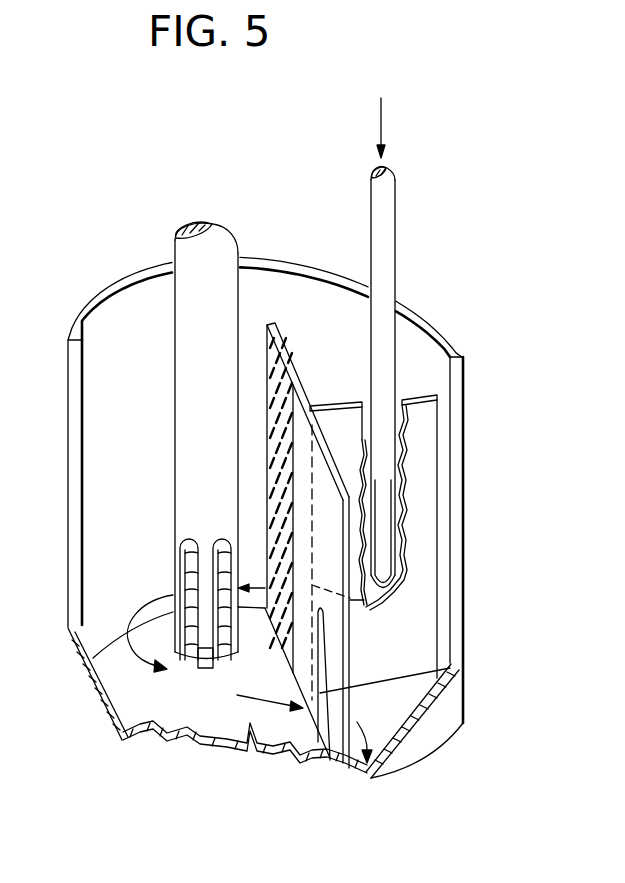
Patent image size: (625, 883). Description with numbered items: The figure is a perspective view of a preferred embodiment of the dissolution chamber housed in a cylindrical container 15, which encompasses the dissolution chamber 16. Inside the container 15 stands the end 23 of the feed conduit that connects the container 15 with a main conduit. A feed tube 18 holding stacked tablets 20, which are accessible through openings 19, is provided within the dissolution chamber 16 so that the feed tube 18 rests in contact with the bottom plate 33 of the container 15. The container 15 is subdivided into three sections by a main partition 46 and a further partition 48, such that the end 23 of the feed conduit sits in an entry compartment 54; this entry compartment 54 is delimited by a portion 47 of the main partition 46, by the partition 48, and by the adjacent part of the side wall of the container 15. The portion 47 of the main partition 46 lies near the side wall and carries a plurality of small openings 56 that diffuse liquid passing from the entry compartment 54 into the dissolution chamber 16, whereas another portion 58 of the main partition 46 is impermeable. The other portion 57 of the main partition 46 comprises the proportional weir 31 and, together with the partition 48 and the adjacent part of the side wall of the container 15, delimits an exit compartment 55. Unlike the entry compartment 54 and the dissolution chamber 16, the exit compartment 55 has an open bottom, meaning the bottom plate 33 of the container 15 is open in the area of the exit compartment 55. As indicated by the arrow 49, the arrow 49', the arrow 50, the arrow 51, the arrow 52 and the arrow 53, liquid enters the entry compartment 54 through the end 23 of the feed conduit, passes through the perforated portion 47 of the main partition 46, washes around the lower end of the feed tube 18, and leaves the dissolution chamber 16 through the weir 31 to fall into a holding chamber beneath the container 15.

The cylindrical container 15 is at (458, 497).
The dissolution chamber 16 is at (106, 510).
The feed tube 18 is at (232, 300).
The openings 19 is at (170, 577).
The stacked tablets 20 is at (229, 635).
The end of the feed conduit 23 is at (388, 208).
The proportional weir 31 is at (325, 737).
The bottom plate 33 is at (203, 749).
The main partition 46 is at (283, 353).
The perforated portion of the main partition 47 is at (273, 500).
The partition 48 is at (430, 602).
The arrow 49 is at (396, 128).
The arrow 49' is at (338, 576).
The arrow 50 is at (253, 584).
The arrow 51 is at (133, 660).
The arrow 52 is at (252, 704).
The arrow 53 is at (357, 722).
The entry compartment 54 is at (337, 394).
The exit compartment 55 is at (428, 445).
The small openings 56 is at (276, 461).
The other portion of the main partition 57 is at (333, 670).
The impermeable portion of the main partition 58 is at (302, 412).